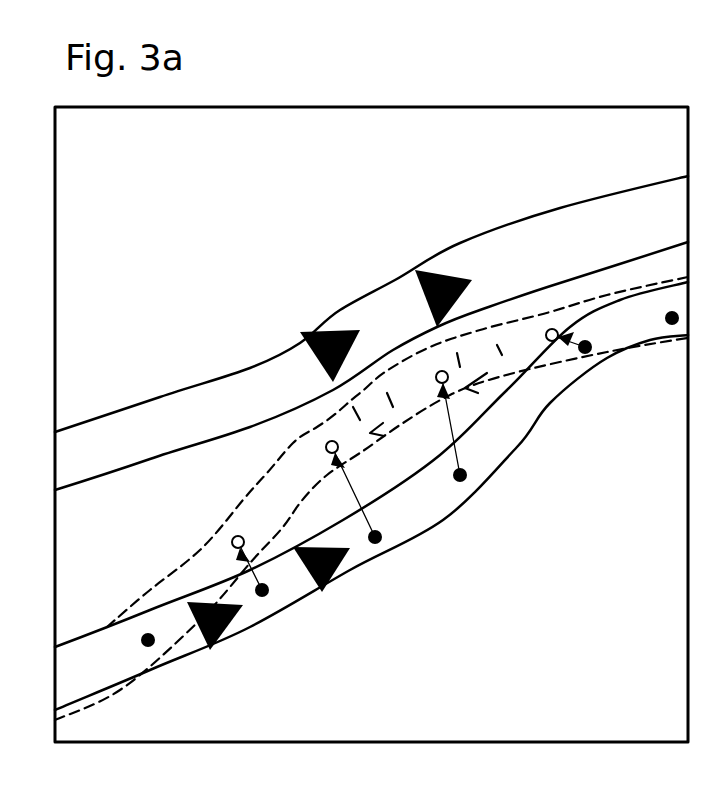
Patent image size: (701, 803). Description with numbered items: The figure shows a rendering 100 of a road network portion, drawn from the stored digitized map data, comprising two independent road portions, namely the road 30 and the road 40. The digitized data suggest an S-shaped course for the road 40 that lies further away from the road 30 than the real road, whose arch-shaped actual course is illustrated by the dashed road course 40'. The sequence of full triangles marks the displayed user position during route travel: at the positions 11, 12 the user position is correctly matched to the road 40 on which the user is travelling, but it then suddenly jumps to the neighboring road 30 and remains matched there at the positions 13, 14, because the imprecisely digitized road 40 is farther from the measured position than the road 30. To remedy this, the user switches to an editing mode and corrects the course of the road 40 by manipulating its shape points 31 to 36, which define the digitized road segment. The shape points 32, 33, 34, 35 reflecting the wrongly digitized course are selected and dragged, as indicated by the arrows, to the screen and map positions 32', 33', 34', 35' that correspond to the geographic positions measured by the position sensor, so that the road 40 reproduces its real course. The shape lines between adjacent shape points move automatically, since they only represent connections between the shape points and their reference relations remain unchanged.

The rendering 100 is at (228, 155).
The road 30 is at (113, 434).
The road 40 is at (371, 496).
The dashed road course 40' is at (371, 531).
The position 11 is at (222, 645).
The position 12 is at (335, 588).
The position 13 is at (310, 333).
The position 14 is at (458, 275).
The shape point 31 is at (140, 646).
The shape point 32 is at (270, 631).
The shape point 33 is at (403, 528).
The shape point 34 is at (485, 475).
The shape point 35 is at (604, 414).
The shape point 36 is at (667, 327).
The map position 32' is at (222, 517).
The map position 33' is at (304, 348).
The map position 34' is at (415, 292).
The map position 35' is at (546, 253).